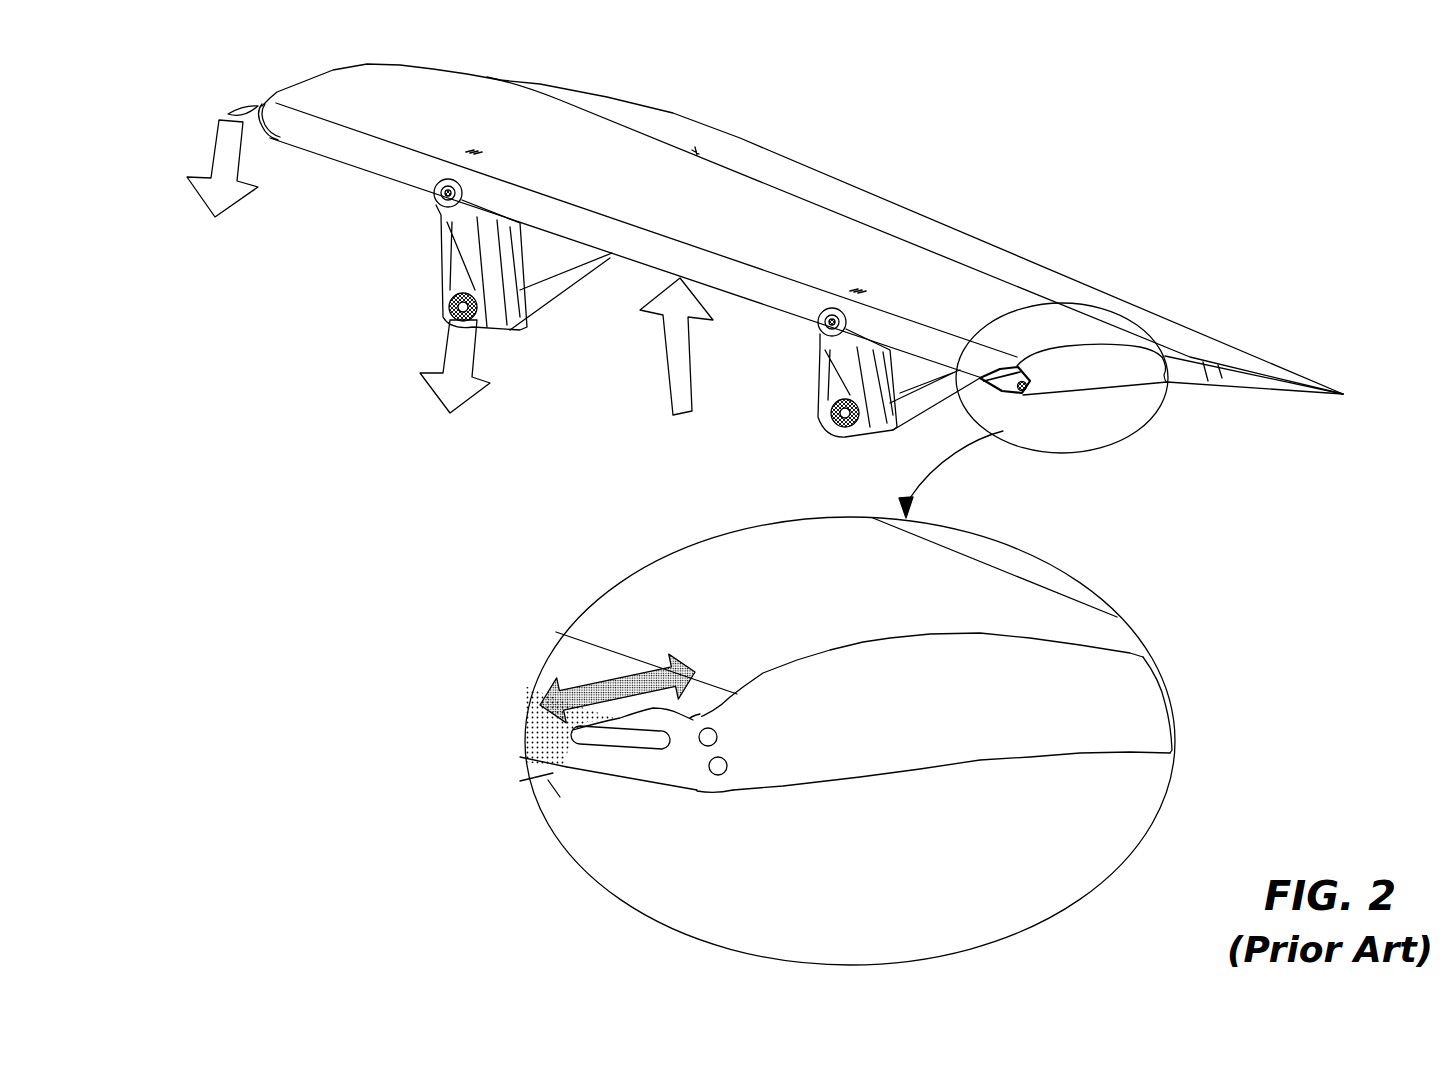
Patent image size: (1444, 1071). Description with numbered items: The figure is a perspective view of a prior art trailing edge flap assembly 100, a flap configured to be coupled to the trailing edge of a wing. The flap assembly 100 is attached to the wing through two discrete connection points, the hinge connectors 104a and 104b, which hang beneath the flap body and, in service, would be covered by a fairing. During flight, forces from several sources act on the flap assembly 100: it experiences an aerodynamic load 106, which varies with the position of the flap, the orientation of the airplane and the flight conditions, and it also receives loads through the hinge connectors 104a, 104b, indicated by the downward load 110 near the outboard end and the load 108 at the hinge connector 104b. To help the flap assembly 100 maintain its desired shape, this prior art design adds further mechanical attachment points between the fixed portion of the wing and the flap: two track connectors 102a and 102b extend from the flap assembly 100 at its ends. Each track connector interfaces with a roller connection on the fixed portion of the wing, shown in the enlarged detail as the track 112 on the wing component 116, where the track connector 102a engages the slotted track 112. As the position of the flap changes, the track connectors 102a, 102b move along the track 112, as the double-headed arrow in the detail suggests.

The trailing edge flap assembly 100 is at (1070, 105).
The track connector 102a is at (692, 833).
The track connector 102b is at (230, 113).
The hinge connector 104a is at (835, 430).
The hinge connector 104b is at (448, 307).
The aerodynamic load 106 is at (663, 397).
The load 108 is at (453, 387).
The load 110 is at (225, 197).
The track 112 is at (630, 728).
The wing component 116 is at (570, 767).